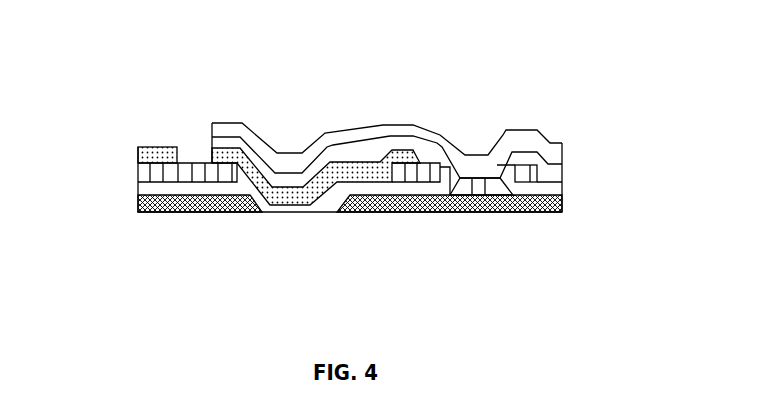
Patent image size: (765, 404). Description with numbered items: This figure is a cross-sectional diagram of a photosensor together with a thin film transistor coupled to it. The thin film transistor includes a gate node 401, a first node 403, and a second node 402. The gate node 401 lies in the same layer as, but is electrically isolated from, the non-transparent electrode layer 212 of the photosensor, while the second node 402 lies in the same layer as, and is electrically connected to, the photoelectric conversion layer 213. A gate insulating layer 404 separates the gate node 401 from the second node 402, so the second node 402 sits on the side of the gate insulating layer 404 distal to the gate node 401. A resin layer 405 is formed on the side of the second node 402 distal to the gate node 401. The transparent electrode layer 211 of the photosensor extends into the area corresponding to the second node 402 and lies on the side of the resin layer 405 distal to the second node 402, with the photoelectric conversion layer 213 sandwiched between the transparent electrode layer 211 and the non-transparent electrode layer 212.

The gate node 401 is at (222, 211).
The second node 402 is at (212, 152).
The first node 403 is at (170, 147).
The gate insulating layer 404 is at (138, 192).
The resin layer 405 is at (218, 143).
The transparent electrode layer 211 is at (434, 132).
The non-transparent electrode layer 212 is at (562, 212).
The photoelectric conversion layer 213 is at (537, 173).